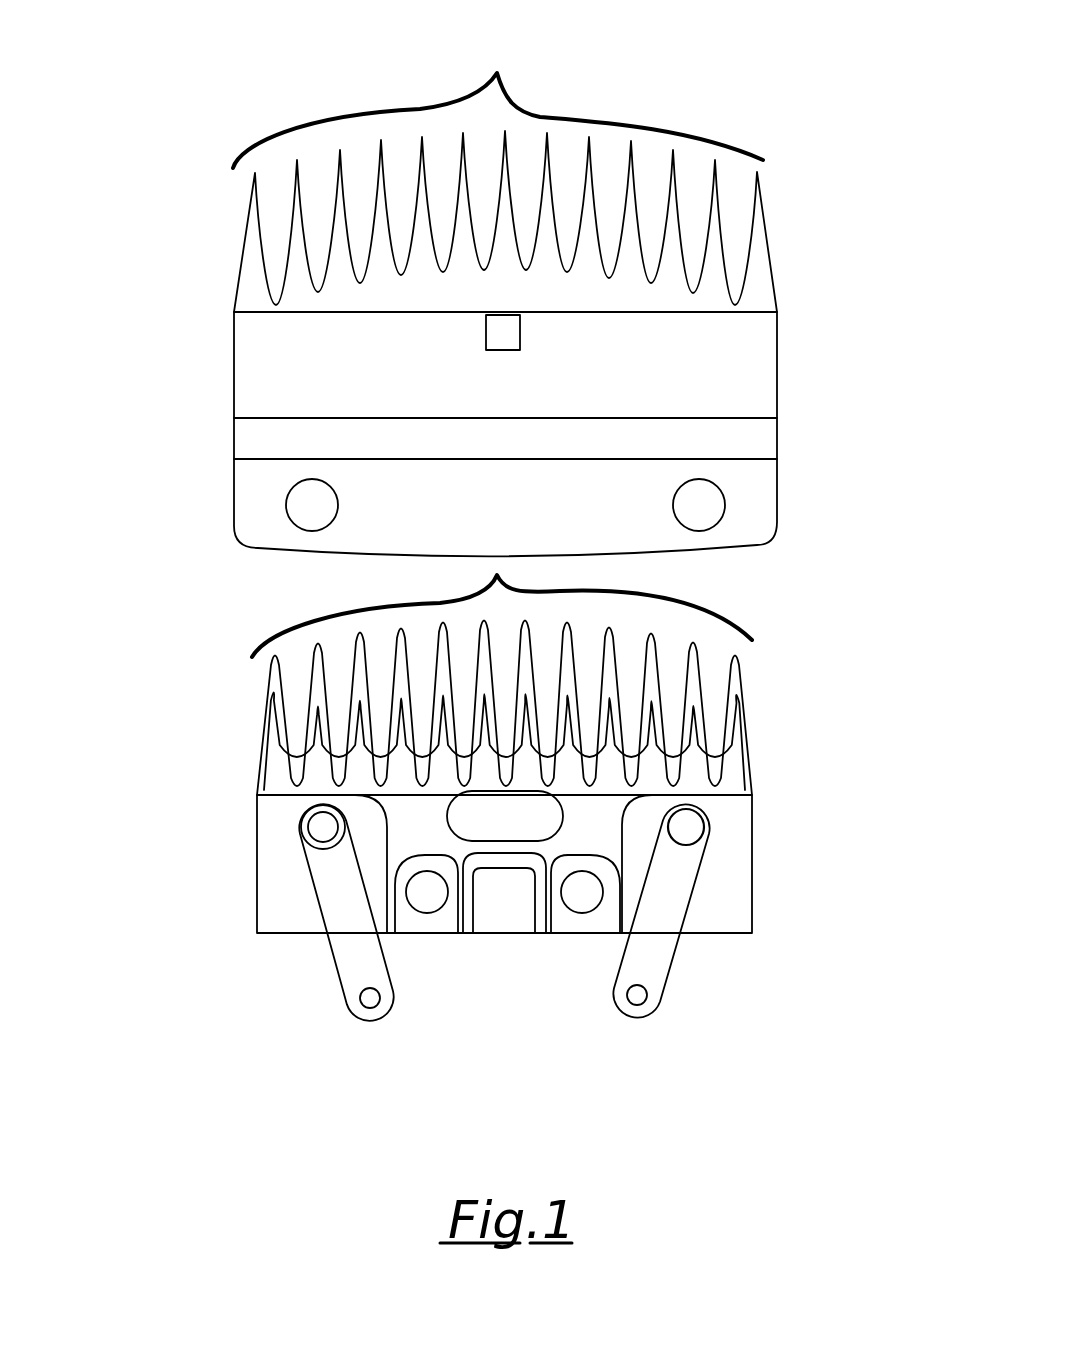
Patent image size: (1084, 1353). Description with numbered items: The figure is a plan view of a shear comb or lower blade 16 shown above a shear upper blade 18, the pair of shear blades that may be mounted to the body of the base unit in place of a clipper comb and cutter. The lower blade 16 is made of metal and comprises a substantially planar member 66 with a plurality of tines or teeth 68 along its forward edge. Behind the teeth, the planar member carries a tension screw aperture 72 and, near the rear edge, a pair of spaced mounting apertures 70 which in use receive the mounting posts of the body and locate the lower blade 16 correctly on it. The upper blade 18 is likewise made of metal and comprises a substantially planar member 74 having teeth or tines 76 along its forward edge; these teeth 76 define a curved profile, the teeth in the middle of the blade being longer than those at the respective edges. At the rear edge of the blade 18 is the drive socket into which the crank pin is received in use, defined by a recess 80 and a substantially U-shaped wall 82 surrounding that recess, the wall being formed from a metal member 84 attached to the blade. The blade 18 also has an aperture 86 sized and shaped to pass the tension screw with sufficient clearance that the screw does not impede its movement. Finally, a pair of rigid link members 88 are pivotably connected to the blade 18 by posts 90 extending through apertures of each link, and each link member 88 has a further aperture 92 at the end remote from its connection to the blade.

The shear comb or lower blade 16 is at (843, 243).
The shear upper blade 18 is at (832, 716).
The substantially planar member 66 is at (246, 358).
The tines or teeth 68 is at (498, 73).
The mounting apertures 70 is at (318, 503).
The tension screw aperture 72 is at (522, 330).
The substantially planar member 74 is at (268, 887).
The teeth or tines 76 is at (510, 574).
The recess 80 is at (507, 974).
The substantially U-shaped wall 82 is at (504, 893).
The member 84 is at (578, 922).
The aperture 86 is at (533, 815).
The link members 88 is at (342, 925).
The posts 90 is at (320, 826).
The further aperture 92 is at (370, 1004).